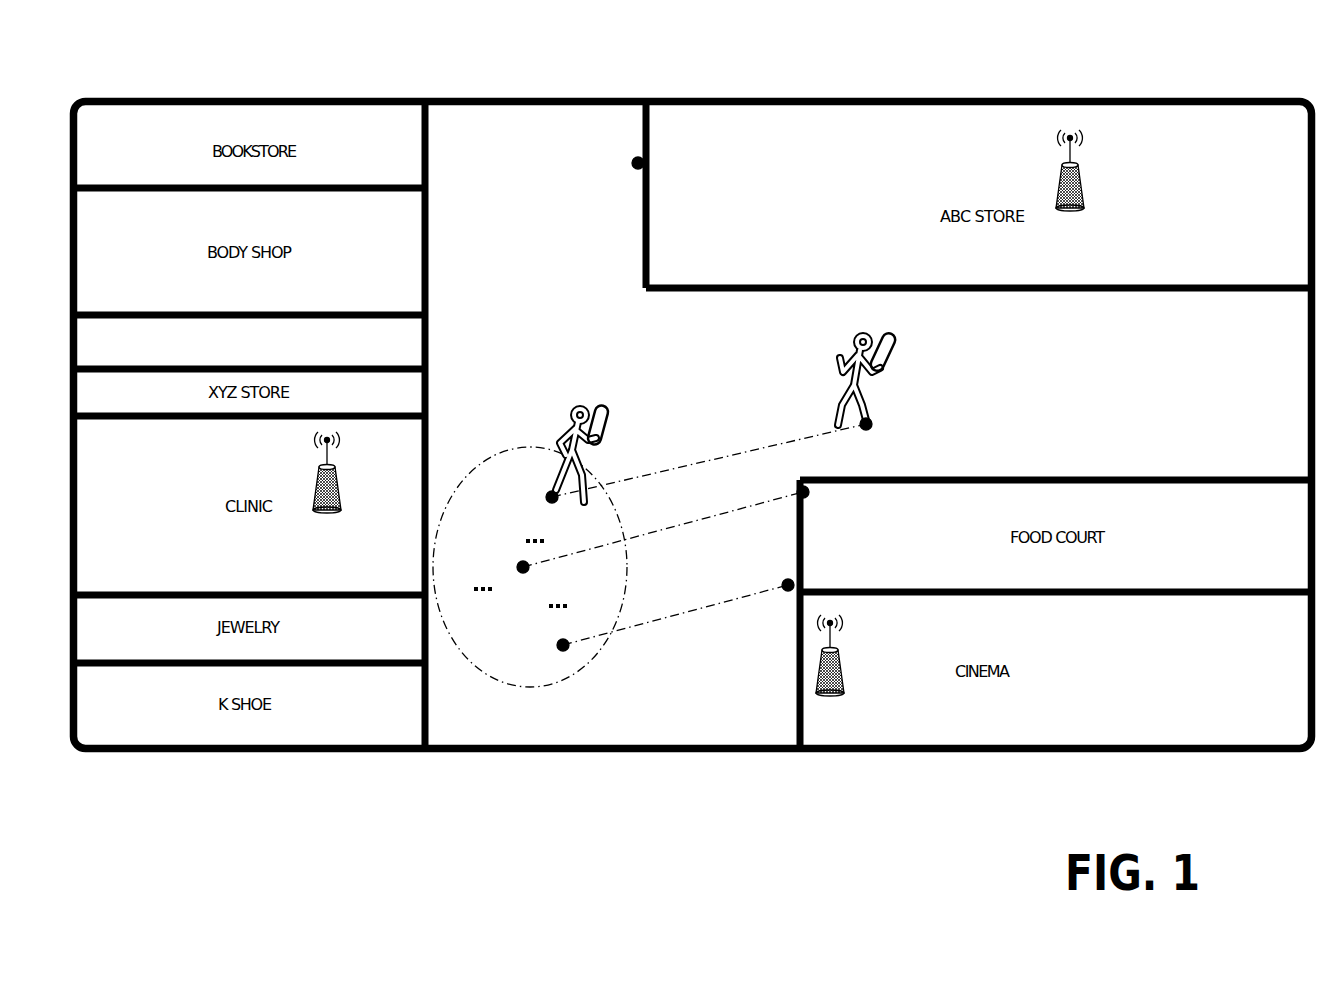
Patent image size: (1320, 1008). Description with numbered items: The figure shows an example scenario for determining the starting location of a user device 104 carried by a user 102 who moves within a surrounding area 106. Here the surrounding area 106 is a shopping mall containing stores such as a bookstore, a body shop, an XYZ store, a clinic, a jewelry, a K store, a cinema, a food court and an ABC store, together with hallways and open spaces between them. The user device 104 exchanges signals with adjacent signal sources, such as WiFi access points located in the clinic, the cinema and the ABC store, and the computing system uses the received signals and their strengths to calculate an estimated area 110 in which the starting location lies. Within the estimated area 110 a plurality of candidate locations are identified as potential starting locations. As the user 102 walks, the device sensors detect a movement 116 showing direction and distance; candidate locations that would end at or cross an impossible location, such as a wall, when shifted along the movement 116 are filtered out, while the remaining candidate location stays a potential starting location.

The user 102 is at (583, 406).
The user device 104 is at (608, 408).
The surrounding area 106 is at (607, 98).
The estimated area 110 is at (531, 692).
The movement 116 is at (773, 391).